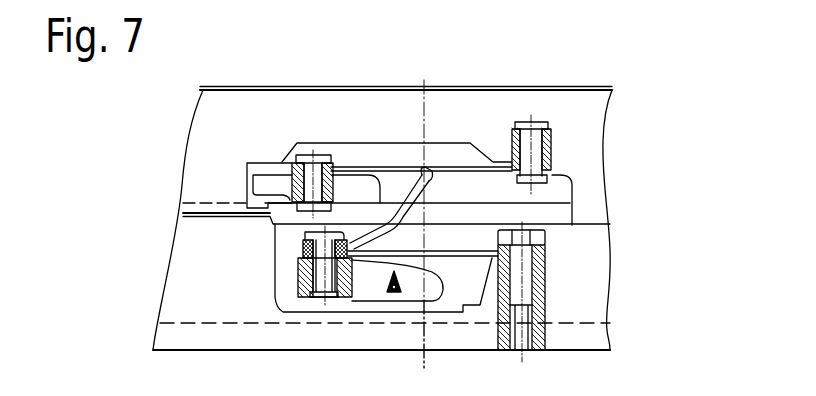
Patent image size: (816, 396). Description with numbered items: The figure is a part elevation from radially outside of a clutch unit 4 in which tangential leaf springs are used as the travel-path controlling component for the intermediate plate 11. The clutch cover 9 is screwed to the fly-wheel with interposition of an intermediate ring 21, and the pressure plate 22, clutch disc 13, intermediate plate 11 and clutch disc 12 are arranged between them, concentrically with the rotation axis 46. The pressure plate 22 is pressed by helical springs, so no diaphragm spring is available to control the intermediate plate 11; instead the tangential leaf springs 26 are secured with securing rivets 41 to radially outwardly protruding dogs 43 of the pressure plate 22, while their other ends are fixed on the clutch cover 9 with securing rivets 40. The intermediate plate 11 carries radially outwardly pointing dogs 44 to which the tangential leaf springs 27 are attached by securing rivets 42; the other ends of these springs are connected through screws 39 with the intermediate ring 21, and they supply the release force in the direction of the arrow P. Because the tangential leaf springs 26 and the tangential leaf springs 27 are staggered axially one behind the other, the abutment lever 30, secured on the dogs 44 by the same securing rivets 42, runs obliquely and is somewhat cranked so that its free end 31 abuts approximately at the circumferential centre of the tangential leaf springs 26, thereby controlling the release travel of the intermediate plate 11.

The clutch unit 4 is at (640, 88).
The clutch cover 9 is at (575, 109).
The intermediate plate 11 is at (466, 275).
The clutch disc 12 is at (578, 337).
The clutch disc 13 is at (545, 215).
The intermediate ring 21 is at (214, 252).
The pressure plate 22 is at (544, 191).
The tangential leaf springs 26 is at (338, 160).
The tangential leaf springs 27 is at (370, 272).
The abutment lever 30 is at (392, 222).
The free end 31 is at (429, 170).
The screws 39 is at (540, 237).
The securing rivets 40 is at (527, 141).
The securing rivets 41 is at (298, 152).
The securing rivets 42 is at (317, 294).
The dogs 43 is at (297, 185).
The dogs 44 is at (306, 272).
The rotation axis 46 is at (424, 110).
The arrow P is at (424, 318).